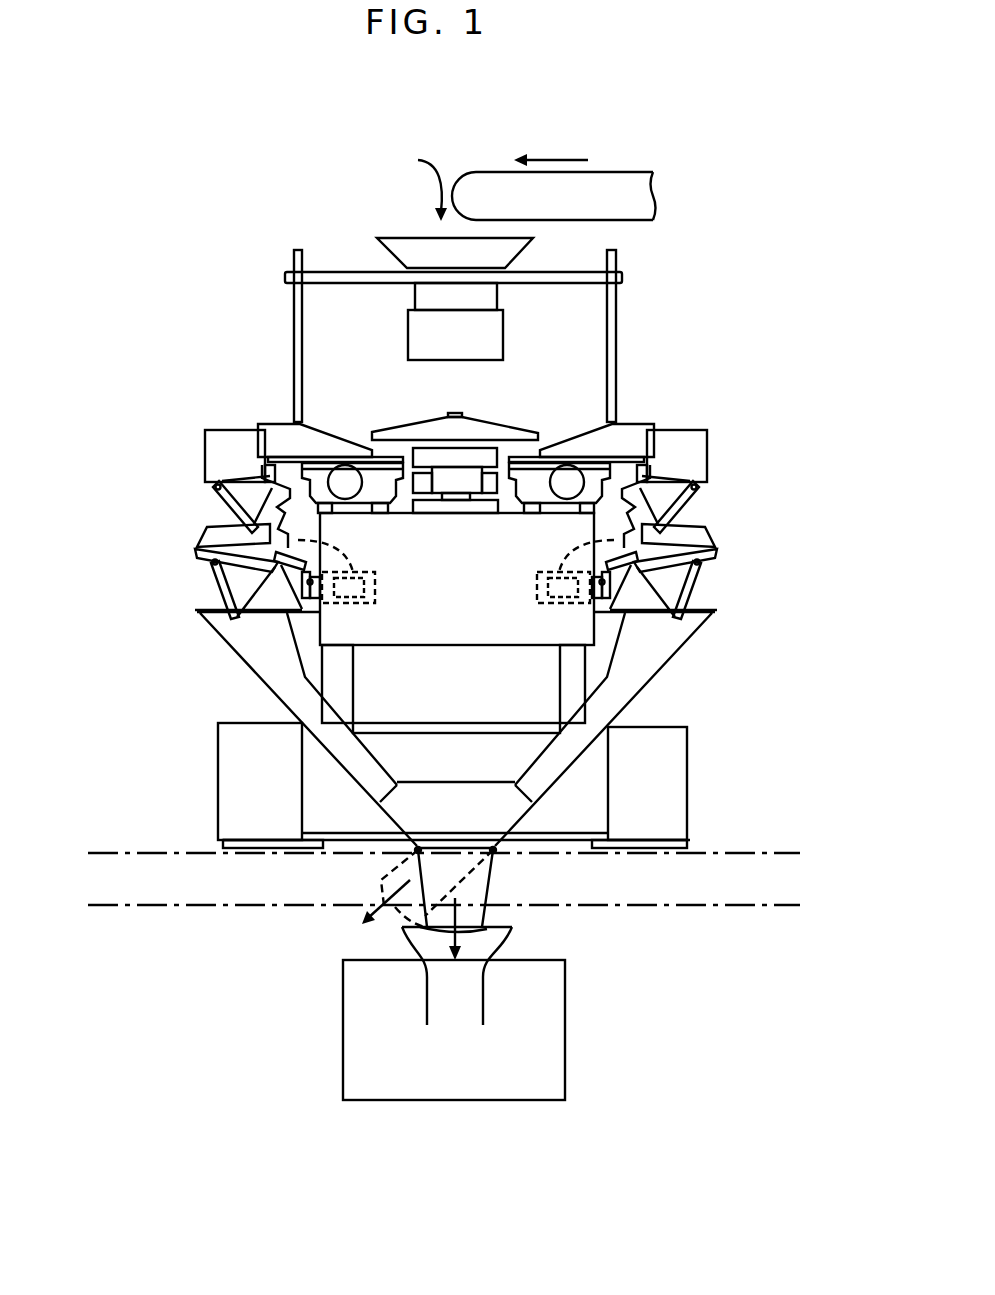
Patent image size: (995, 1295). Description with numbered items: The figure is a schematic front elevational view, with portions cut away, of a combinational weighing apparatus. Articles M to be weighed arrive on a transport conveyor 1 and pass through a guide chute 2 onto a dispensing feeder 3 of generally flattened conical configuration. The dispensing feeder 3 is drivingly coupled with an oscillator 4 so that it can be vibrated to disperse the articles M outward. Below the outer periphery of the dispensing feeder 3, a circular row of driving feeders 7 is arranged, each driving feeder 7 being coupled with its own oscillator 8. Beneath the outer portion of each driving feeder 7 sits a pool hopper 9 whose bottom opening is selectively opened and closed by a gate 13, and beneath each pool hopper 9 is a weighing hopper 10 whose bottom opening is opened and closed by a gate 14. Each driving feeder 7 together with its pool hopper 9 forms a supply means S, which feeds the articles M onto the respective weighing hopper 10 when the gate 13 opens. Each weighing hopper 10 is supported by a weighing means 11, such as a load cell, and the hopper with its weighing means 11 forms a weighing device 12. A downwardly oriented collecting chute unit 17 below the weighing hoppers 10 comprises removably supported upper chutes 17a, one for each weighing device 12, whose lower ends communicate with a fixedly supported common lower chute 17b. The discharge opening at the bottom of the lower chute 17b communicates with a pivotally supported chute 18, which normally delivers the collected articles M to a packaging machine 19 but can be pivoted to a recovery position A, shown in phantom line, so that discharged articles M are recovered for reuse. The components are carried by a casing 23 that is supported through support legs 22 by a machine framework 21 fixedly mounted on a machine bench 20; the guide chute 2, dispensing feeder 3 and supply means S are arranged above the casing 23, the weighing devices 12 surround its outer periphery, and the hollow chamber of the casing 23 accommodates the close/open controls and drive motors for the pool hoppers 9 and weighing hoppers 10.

The transport conveyor 1 is at (607, 172).
The guide chute 2 is at (400, 237).
The dispensing feeder 3 is at (483, 419).
The oscillator 4 is at (447, 460).
The driving feeder 7 is at (290, 433).
The oscillator 8 is at (380, 483).
The pool hopper 9 is at (212, 448).
The weighing hopper 10 is at (207, 530).
The weighing means 11 is at (200, 555).
The weighing device 12 is at (127, 519).
The gate 13 is at (218, 489).
The gate 14 is at (213, 603).
The collecting chute unit 17 is at (246, 671).
The upper chute 17a is at (287, 702).
The common lower chute 17b is at (380, 800).
The pivotally supported chute 18 is at (475, 895).
The packaging machine 19 is at (547, 1037).
The machine bench 20 is at (757, 853).
The machine framework 21 is at (665, 728).
The support leg 22 is at (568, 700).
The casing 23 is at (447, 623).
The articles M is at (419, 181).
The supply means S is at (152, 348).
The recovery position A is at (376, 908).